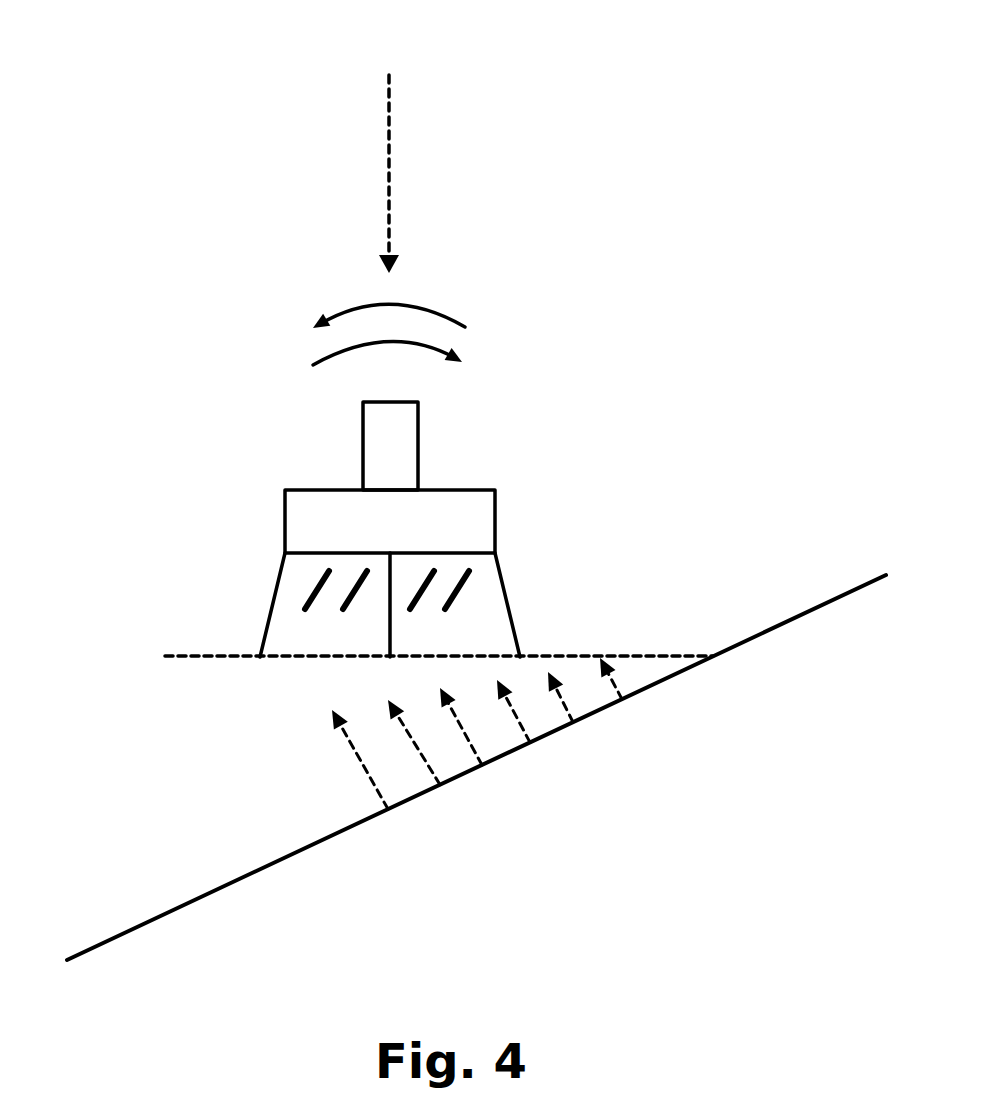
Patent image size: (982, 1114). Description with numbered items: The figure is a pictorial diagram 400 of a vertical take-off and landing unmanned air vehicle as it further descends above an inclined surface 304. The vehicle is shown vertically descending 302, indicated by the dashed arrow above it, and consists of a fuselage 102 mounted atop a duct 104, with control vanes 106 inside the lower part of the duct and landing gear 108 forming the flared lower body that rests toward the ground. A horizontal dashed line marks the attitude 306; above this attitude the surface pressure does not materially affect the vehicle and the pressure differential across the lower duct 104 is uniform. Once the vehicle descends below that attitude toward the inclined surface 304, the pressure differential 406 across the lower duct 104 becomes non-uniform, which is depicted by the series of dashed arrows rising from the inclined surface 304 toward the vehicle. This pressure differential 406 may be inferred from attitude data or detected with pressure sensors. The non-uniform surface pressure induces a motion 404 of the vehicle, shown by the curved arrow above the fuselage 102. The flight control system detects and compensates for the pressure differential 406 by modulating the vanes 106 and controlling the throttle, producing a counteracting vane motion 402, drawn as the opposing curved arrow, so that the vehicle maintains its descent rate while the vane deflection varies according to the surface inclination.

The pictorial diagram 400 is at (772, 89).
The vertical descent 302 is at (391, 197).
The counteracting vane motion 402 is at (466, 325).
The motion induced by surface pressure 404 is at (466, 360).
The fuselage 102 is at (418, 420).
The duct 104 is at (495, 513).
The control vanes 106 is at (460, 581).
The landing gear 108 is at (513, 628).
The attitude 306 is at (198, 658).
The inclined surface 304 is at (681, 673).
The pressure differential 406 is at (318, 779).